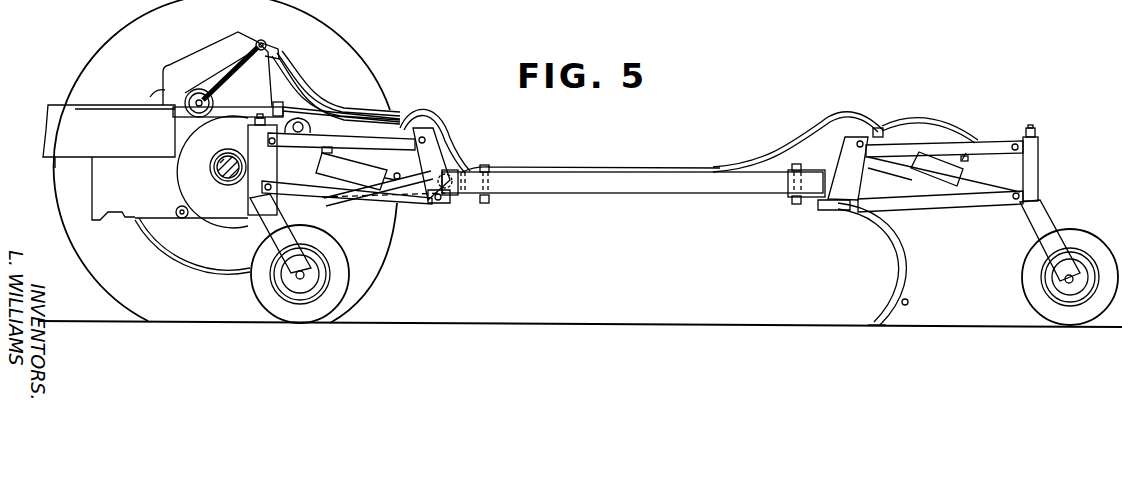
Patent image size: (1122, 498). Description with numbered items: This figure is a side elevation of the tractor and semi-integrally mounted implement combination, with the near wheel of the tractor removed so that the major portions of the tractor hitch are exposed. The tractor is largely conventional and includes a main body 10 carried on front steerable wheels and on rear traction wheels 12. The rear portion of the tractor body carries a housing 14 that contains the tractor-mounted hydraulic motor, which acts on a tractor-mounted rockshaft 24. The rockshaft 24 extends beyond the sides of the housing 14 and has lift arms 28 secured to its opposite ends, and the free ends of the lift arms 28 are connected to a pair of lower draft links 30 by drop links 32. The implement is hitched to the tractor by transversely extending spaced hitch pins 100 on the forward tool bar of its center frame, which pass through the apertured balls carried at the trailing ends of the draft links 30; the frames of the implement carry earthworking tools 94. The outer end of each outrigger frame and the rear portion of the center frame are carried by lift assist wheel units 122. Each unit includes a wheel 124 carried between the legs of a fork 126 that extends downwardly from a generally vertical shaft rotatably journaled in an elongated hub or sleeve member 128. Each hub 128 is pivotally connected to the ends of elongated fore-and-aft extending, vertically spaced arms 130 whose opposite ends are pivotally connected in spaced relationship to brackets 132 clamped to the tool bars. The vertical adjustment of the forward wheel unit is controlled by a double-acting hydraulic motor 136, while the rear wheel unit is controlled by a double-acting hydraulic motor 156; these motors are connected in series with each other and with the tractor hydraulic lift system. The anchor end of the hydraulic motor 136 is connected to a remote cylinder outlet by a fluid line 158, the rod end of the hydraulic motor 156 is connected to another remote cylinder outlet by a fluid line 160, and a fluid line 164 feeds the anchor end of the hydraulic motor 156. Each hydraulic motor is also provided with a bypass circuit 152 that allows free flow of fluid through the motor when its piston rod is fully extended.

The main body 10 is at (70, 117).
The rear traction wheels 12 is at (107, 57).
The housing 14 is at (190, 62).
The rockshaft 24 is at (212, 108).
The lift arms 28 is at (233, 63).
The lower draft links 30 is at (353, 207).
The drop links 32 is at (292, 72).
The earthworking tools 94 is at (900, 293).
The hitch pins 100 is at (450, 203).
The lift assist wheel units 122 is at (237, 288).
The wheel 124 is at (333, 307).
The fork 126 is at (250, 243).
The hub or sleeve member 128 is at (250, 145).
The arms 130 is at (280, 155).
The brackets 132 is at (430, 205).
The double-acting hydraulic motor 136 is at (448, 147).
The bypass circuit 152 is at (345, 117).
The double-acting hydraulic motor 156 is at (947, 190).
The fluid line 158 is at (433, 110).
The fluid line 160 is at (892, 122).
The fluid line 164 is at (822, 123).